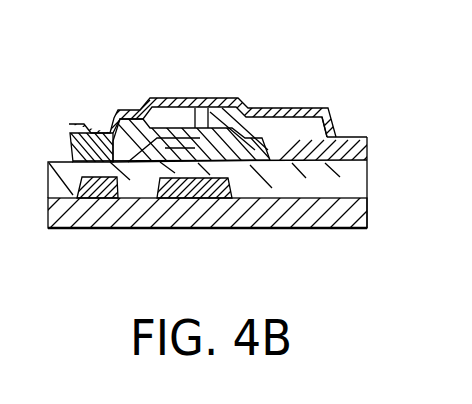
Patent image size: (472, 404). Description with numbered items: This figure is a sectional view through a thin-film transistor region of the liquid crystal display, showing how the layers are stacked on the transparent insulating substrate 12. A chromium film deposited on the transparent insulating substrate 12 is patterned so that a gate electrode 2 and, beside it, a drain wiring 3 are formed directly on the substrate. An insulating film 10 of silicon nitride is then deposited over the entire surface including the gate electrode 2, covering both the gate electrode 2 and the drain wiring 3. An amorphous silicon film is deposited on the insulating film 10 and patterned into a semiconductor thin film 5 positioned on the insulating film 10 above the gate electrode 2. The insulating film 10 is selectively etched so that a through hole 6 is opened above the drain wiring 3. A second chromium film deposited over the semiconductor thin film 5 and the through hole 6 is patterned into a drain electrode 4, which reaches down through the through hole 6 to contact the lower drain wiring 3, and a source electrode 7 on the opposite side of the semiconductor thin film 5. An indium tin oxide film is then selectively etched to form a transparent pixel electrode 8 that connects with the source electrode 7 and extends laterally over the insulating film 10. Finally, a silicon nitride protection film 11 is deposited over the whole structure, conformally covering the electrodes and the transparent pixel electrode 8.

The gate electrode 2 is at (203, 195).
The drain wiring 3 is at (112, 200).
The drain electrode 4 is at (163, 110).
The semiconductor thin film 5 is at (193, 120).
The through hole 6 is at (100, 167).
The source electrode 7 is at (222, 117).
The transparent pixel electrode 8 is at (347, 153).
The insulating film 10 is at (348, 180).
The protection film 11 is at (290, 110).
The transparent insulating substrate 12 is at (347, 217).